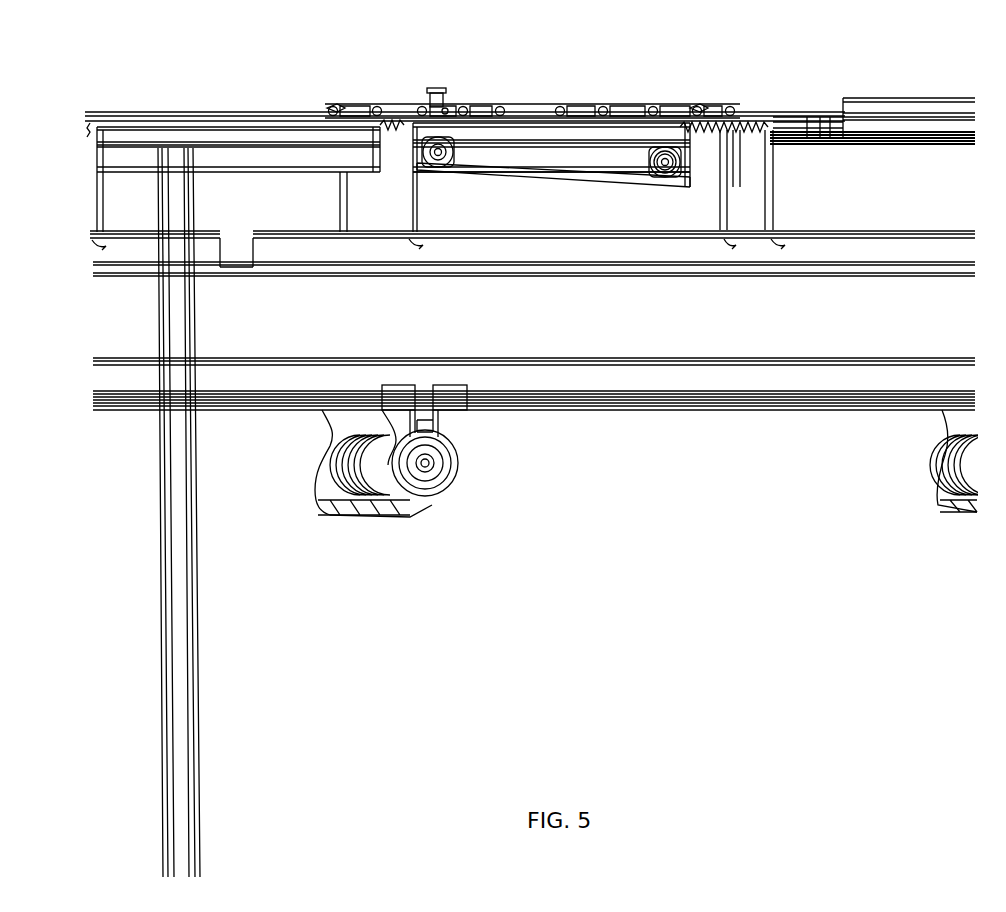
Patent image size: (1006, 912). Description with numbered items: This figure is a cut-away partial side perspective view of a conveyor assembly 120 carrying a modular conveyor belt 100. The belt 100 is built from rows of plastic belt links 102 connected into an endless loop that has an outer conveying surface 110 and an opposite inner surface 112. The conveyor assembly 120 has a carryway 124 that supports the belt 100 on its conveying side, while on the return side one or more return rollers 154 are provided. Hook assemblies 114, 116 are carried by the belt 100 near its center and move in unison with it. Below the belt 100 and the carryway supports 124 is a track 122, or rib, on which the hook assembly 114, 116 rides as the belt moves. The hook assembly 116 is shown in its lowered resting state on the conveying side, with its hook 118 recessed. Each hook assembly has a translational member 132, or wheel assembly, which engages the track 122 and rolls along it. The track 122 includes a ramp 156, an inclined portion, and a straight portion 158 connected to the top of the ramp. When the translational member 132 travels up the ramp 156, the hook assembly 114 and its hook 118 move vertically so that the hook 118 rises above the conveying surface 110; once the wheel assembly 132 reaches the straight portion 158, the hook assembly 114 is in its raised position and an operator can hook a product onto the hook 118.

The modular conveyor belt 100 is at (609, 96).
The belt links 102 is at (337, 108).
The outer conveying surface 110 is at (285, 72).
The inner surface 112 is at (233, 204).
The hook assembly 114 is at (431, 93).
The hook assembly 116 is at (653, 158).
The hook 118 is at (445, 108).
The conveyor assembly 120 is at (541, 519).
The track 122 is at (516, 194).
The carryway supports 124 is at (752, 178).
The translational member 132 is at (437, 165).
The return rollers 154 is at (433, 490).
The ramp 156 is at (638, 175).
The straight portion 158 is at (455, 174).